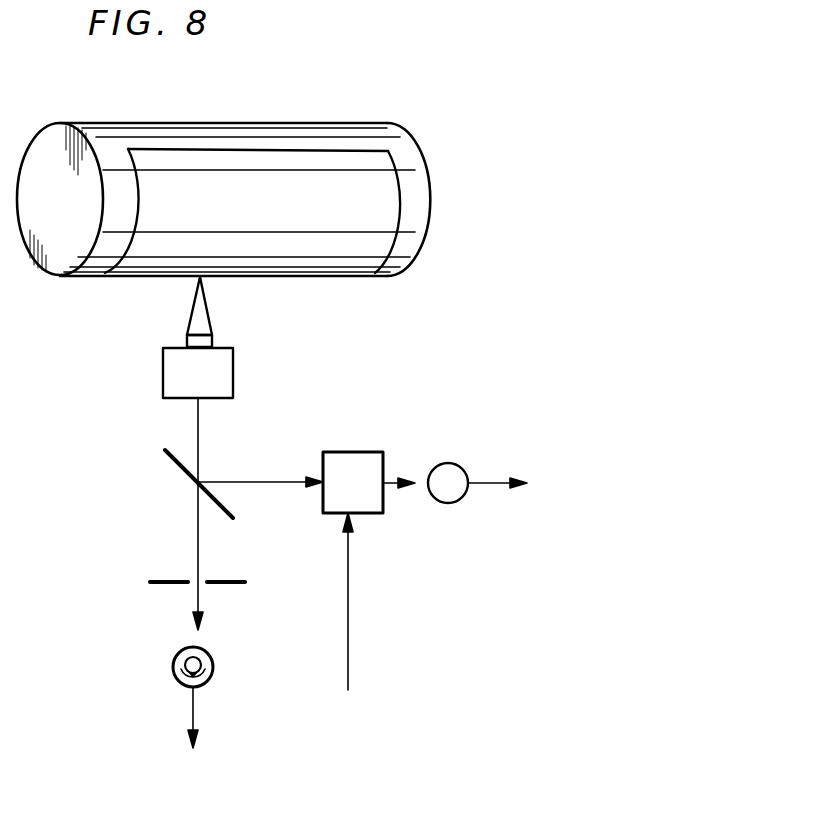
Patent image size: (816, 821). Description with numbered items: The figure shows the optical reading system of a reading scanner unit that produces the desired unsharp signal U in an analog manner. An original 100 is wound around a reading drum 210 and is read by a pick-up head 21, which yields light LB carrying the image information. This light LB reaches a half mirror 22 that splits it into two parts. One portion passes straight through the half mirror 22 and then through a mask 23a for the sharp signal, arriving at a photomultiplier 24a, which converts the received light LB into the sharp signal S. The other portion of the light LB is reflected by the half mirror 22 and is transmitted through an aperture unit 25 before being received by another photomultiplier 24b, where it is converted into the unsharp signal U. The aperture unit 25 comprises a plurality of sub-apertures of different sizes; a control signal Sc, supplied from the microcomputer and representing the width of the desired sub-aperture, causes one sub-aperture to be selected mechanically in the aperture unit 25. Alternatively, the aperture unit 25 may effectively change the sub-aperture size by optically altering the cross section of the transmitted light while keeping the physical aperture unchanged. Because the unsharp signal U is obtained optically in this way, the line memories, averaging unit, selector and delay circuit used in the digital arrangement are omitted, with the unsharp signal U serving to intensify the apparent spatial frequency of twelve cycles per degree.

The original 100 is at (393, 245).
The reading drum 210 is at (402, 137).
The pick-up head 21 is at (233, 350).
The half mirror 22 is at (170, 448).
The mask for the sharp signal 23a is at (172, 580).
The photomultiplier 24a is at (180, 656).
The photomultiplier 24b is at (447, 463).
The aperture unit 25 is at (348, 452).
The light LB is at (200, 446).
The sharp signal S is at (190, 712).
The control signal Sc is at (343, 625).
The unsharp signal U is at (491, 485).